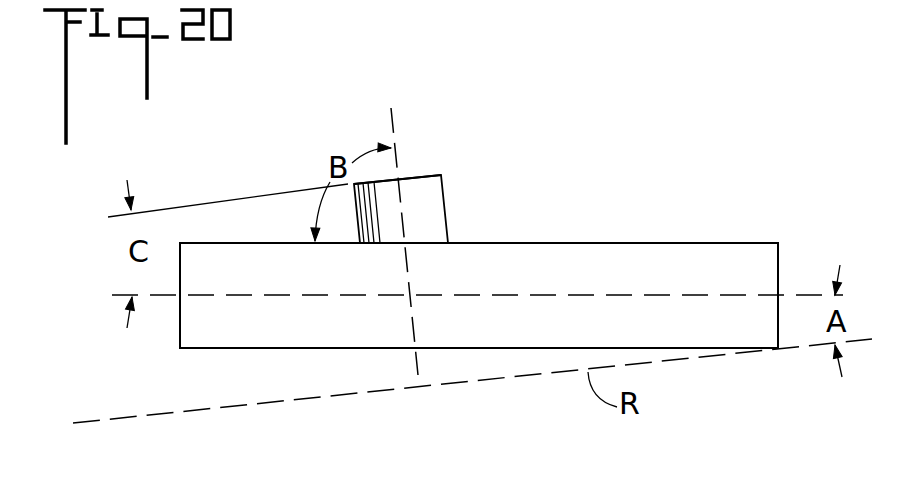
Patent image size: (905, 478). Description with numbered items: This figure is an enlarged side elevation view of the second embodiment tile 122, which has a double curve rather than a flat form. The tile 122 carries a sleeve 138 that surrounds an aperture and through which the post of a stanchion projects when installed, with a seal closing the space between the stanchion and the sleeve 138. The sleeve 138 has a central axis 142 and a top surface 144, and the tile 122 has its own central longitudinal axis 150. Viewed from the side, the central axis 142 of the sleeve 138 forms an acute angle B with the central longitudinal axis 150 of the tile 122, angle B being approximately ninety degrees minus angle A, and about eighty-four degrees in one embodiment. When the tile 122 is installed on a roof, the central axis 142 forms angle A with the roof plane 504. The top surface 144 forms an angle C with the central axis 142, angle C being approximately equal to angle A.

The second embodiment tile 122 is at (737, 191).
The sleeve 138 is at (447, 205).
The central axis 142 is at (393, 128).
The top surface 144 is at (415, 177).
The central longitudinal axis 150 is at (560, 295).
The roof plane 504 is at (90, 418).